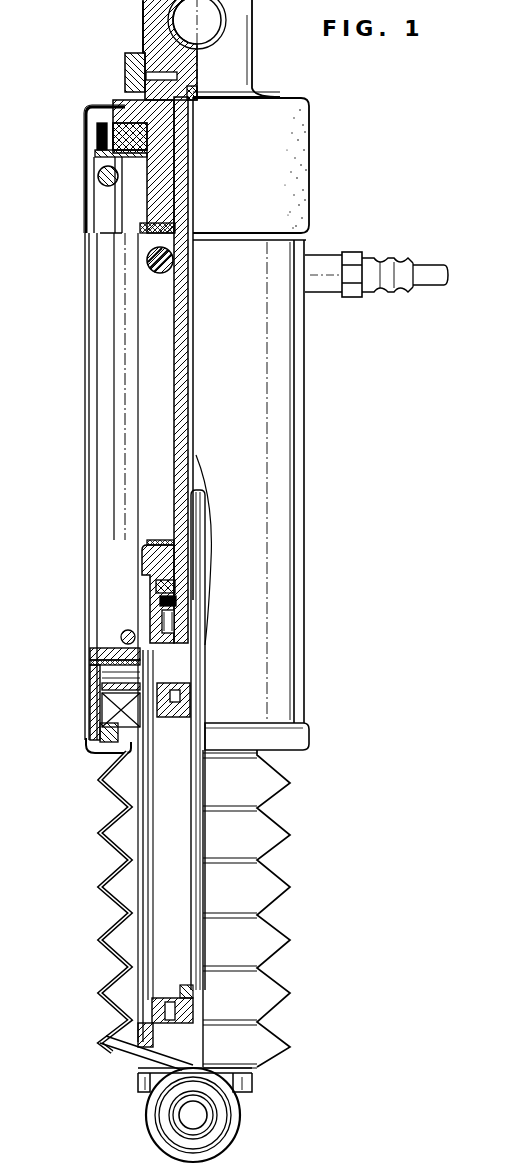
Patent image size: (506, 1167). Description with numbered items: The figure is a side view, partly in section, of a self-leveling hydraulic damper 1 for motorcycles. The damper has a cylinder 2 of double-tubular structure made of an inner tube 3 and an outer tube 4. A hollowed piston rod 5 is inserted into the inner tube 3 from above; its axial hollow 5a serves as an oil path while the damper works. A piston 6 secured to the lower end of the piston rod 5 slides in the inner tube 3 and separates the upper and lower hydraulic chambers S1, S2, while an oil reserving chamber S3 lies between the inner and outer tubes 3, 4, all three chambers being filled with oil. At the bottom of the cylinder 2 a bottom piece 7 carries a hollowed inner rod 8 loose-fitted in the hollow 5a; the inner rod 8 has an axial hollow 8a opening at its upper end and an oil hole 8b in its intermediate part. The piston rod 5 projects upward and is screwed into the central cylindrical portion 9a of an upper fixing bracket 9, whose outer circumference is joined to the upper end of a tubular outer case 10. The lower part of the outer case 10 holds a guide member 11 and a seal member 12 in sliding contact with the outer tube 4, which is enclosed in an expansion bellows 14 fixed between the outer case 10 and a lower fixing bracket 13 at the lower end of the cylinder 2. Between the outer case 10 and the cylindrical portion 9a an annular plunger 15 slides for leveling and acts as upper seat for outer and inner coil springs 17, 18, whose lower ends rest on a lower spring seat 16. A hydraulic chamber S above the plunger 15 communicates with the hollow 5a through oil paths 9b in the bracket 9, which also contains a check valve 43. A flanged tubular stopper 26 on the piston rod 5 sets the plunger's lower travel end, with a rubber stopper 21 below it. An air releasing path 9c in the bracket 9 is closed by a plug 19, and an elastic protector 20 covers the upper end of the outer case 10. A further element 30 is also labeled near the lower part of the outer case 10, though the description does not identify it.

The hydraulic damper 1 is at (325, 118).
The cylinder 2 is at (130, 845).
The inner tube 3 is at (147, 977).
The outer tube 4 is at (140, 903).
The piston rod 5 is at (173, 420).
The axial hollow 5a is at (193, 437).
The piston 6 is at (175, 620).
The bottom piece 7 is at (160, 1045).
The inner rod 8 is at (185, 827).
The axial hollow 8a is at (210, 803).
The oil hole 8b is at (196, 737).
The upper fixing bracket 9 is at (237, 57).
The central cylindrical portion 9a is at (160, 157).
The oil paths 9b is at (140, 48).
The air releasing path 9c is at (147, 53).
The outer case 10 is at (88, 433).
The guide member 11 is at (92, 700).
The seal member 12 is at (97, 748).
The lower fixing bracket 13 is at (152, 1124).
The expansion bellows 14 is at (133, 1030).
The annular plunger 15 is at (97, 157).
The lower spring seat 16 is at (90, 665).
The outer coil spring 17 is at (100, 175).
The inner coil spring 18 is at (120, 190).
The plug 19 is at (132, 68).
The protector 20 is at (90, 147).
The rubber stopper 21 is at (168, 275).
The flanged tubular stopper 26 is at (147, 233).
The retainer 30 is at (157, 703).
The check valve 43 is at (197, 97).
The hydraulic chamber S is at (93, 103).
The upper hydraulic chamber S1 is at (167, 592).
The lower hydraulic chamber S2 is at (163, 800).
The oil reserving chamber S3 is at (143, 942).